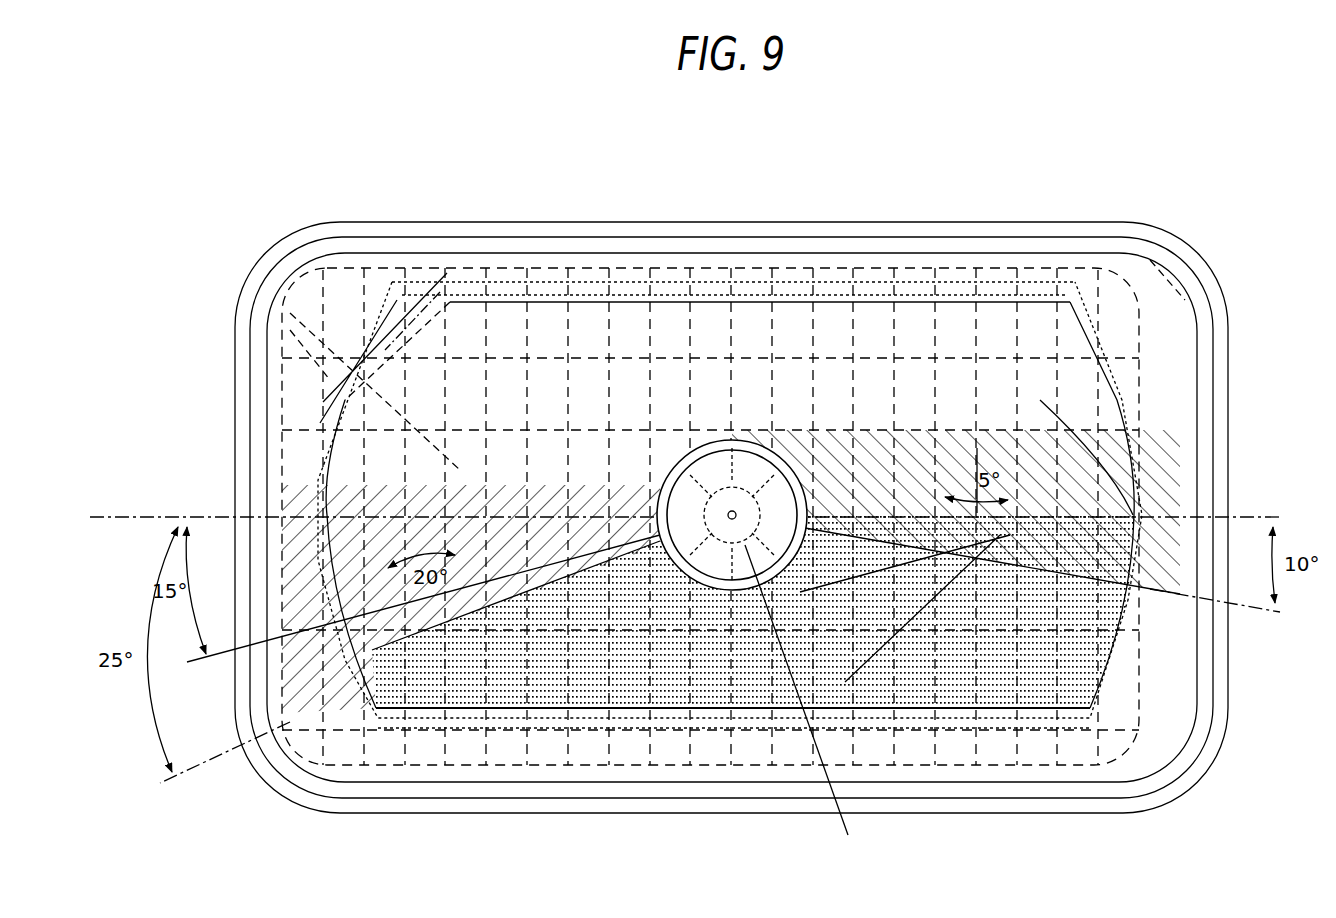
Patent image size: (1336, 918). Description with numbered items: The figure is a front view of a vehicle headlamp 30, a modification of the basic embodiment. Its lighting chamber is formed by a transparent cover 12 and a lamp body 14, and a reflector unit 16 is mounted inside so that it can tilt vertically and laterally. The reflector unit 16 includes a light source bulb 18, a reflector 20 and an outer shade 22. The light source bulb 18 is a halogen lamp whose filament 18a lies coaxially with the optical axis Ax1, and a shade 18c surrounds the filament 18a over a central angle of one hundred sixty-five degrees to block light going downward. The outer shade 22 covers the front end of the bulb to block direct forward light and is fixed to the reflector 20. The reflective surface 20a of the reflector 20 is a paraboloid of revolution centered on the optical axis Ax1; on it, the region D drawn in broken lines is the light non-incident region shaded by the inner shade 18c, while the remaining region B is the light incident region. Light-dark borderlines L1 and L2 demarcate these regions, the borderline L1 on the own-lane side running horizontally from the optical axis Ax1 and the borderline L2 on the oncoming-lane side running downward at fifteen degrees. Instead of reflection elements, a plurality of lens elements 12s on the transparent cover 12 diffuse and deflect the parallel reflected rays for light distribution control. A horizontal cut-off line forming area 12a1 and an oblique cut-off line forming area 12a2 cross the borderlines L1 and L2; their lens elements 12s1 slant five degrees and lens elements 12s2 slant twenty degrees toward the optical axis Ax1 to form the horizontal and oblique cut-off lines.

The transparent cover 12 is at (1007, 253).
The horizontal cut-off line forming area 12a1 is at (1195, 345).
The oblique cut-off line forming area 12a2 is at (268, 405).
The lens elements 12s is at (503, 377).
The lens elements of horizontal cut-off line forming area 12s1 is at (1190, 243).
The lens elements of oblique cut-off line forming area 12s2 is at (283, 318).
The lamp body 14 is at (938, 218).
The reflector unit 16 is at (800, 268).
The light source bulb 18 is at (728, 488).
The filament 18a is at (702, 505).
The shade 18c is at (637, 712).
The reflector 20 is at (615, 283).
The reflective surface 20a is at (715, 320).
The outer shade 22 is at (790, 460).
The vehicle headlamp 30 is at (1180, 160).
The light incident region B is at (1085, 387).
The light non-incident region D is at (1090, 640).
The light-dark borderline L1 is at (1120, 428).
The light-dark borderline L2 is at (345, 482).
The optical axis Ax1 is at (805, 706).